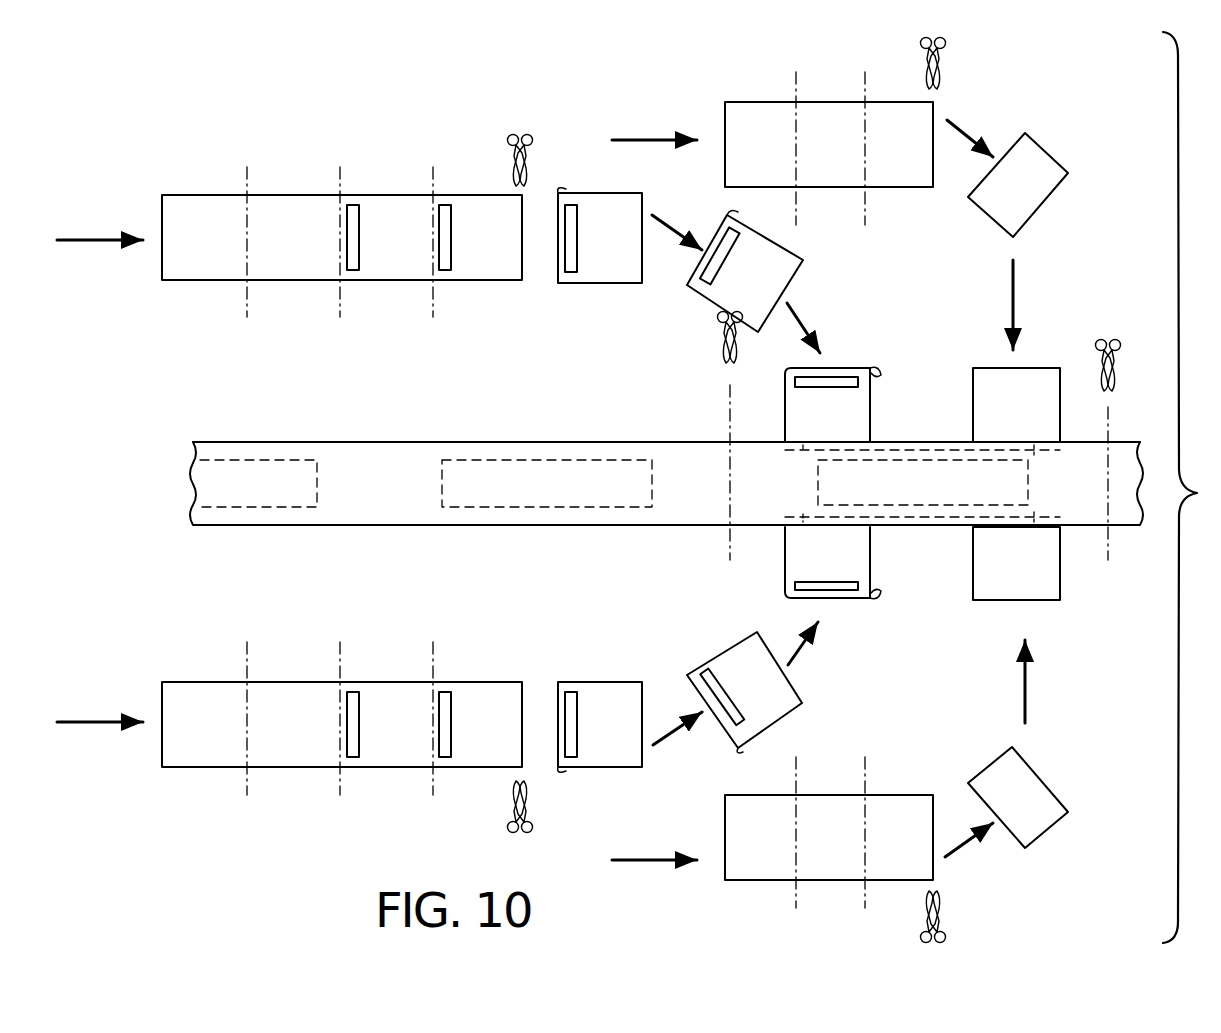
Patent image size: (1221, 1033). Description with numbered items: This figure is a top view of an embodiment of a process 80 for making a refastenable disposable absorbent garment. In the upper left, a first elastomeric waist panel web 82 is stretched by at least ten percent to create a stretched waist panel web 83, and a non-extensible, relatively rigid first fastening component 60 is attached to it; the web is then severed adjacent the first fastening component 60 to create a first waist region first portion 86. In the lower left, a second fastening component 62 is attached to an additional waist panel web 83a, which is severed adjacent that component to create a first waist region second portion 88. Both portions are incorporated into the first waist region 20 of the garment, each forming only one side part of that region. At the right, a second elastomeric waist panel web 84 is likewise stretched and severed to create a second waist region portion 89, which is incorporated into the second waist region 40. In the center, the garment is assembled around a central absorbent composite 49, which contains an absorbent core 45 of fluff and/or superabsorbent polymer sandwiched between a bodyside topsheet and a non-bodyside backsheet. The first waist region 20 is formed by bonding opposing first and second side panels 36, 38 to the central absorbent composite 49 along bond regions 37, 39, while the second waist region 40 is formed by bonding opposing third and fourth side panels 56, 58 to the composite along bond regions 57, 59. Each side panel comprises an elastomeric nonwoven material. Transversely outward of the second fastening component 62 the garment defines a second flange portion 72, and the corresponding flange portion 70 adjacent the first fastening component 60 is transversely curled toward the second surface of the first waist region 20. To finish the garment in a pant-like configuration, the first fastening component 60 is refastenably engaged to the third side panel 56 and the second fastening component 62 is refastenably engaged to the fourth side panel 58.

The process 80 is at (195, 98).
The first elastomeric waist panel web 82 is at (208, 195).
The stretched waist panel web 83 is at (352, 195).
The additional waist panel web 83a is at (352, 767).
The second elastomeric waist panel web 84 is at (763, 102).
The first waist region first portion 86 is at (615, 193).
The first waist region second portion 88 is at (830, 600).
The second waist region portion 89 is at (1048, 148).
The first fastening component 60 is at (360, 228).
The second fastening component 62 is at (360, 705).
The second flange portion 70 is at (878, 372).
The second flange portion 72 is at (876, 597).
The second waist region 40 is at (1038, 368).
The third side panel 56 is at (973, 398).
The fourth side panel 58 is at (973, 578).
The first side panel 36 is at (872, 402).
The second side panel 38 is at (872, 563).
The first waist region 20 is at (785, 420).
The bond region 37 is at (798, 456).
The bond region 39 is at (798, 513).
The bond region 57 is at (1036, 465).
The bond region 59 is at (1036, 514).
The absorbent core 45 is at (485, 512).
The central absorbent composite 49 is at (625, 527).